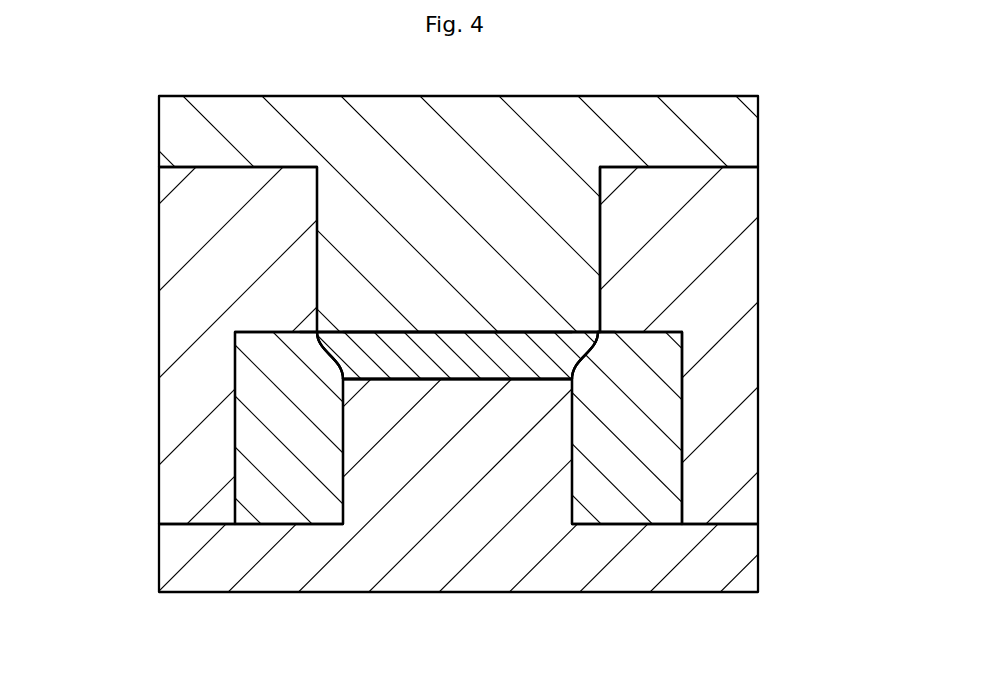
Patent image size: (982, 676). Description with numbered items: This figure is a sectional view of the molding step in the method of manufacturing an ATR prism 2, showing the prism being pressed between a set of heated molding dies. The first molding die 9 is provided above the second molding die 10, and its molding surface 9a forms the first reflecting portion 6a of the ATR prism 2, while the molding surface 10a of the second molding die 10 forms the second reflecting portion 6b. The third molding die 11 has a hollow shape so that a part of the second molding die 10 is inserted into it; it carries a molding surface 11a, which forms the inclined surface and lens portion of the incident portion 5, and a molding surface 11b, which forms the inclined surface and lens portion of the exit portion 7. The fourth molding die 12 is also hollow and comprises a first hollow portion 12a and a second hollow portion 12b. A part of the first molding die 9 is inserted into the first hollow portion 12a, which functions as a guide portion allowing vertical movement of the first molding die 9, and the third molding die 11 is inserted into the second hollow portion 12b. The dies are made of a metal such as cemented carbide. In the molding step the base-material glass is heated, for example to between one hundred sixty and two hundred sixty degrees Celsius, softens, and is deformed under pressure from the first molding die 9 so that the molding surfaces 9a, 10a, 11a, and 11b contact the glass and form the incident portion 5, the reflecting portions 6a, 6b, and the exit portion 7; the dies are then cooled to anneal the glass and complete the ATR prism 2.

The ATR prism 2 is at (466, 374).
The incident portion 5 is at (322, 368).
The first reflecting portion 6a is at (518, 332).
The second reflecting portion 6b is at (526, 380).
The exit portion 7 is at (590, 370).
The first molding die 9 is at (634, 110).
The molding surface 9a is at (405, 337).
The second molding die 10 is at (424, 575).
The molding surface 10a is at (400, 378).
The third molding die 11 is at (652, 436).
The molding surface 11a is at (332, 336).
The molding surface 11b is at (600, 343).
The fourth molding die 12 is at (762, 251).
The first hollow portion 12a is at (602, 234).
The second hollow portion 12b is at (685, 462).